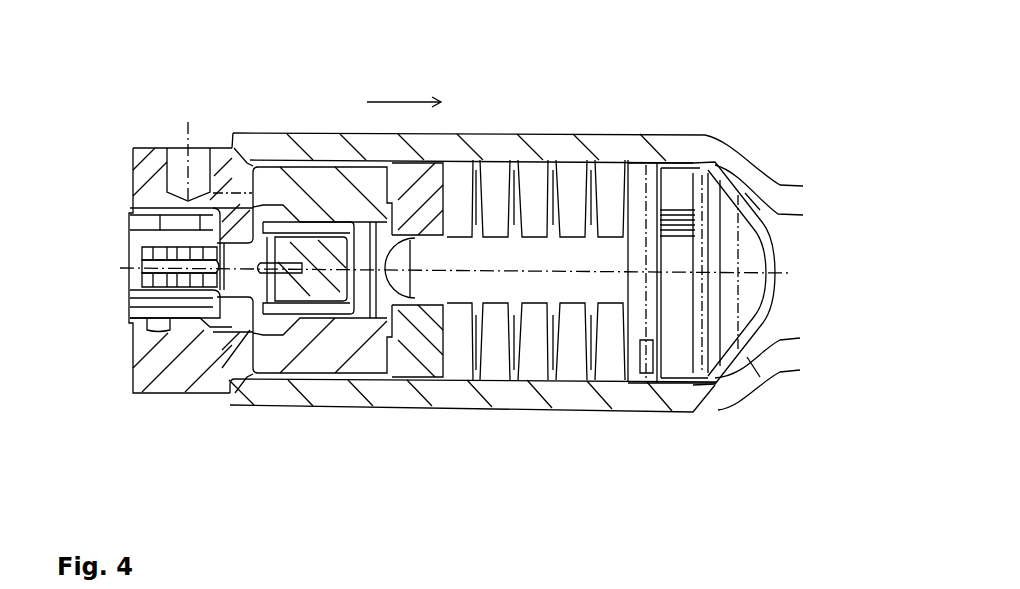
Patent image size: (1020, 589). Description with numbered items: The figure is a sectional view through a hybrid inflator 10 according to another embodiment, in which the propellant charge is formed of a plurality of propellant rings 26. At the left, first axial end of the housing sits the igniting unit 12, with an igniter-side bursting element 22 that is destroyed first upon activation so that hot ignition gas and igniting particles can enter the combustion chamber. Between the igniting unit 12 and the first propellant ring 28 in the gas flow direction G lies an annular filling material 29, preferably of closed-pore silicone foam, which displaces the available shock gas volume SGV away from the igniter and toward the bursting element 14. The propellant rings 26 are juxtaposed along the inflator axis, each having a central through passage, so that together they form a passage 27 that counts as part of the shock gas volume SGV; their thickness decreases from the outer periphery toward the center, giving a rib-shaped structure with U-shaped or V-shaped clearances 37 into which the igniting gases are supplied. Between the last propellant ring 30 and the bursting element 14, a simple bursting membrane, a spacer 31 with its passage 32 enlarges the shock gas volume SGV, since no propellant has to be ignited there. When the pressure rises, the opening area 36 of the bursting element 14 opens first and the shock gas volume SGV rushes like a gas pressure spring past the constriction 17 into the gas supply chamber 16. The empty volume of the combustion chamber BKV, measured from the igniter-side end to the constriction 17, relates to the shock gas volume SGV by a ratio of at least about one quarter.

The hybrid inflator 10 is at (196, 95).
The igniting unit 12 is at (204, 385).
The bursting element 14 is at (728, 380).
The gas supply chamber 16 is at (788, 318).
The constriction 17 is at (785, 184).
The igniter-side bursting element 22 is at (362, 335).
The propellant rings 26 is at (503, 175).
The passage 27 is at (467, 172).
The first propellant ring 28 is at (459, 378).
The filling material 29 is at (395, 350).
The last propellant ring 30 is at (613, 173).
The spacer 31 is at (641, 172).
The passage 32 is at (617, 300).
The opening area 36 is at (777, 273).
The clearances 37 is at (552, 200).
The empty volume of the combustion chamber BKV is at (305, 135).
The gas flow direction G is at (404, 93).
The shock gas volume SGV is at (653, 305).